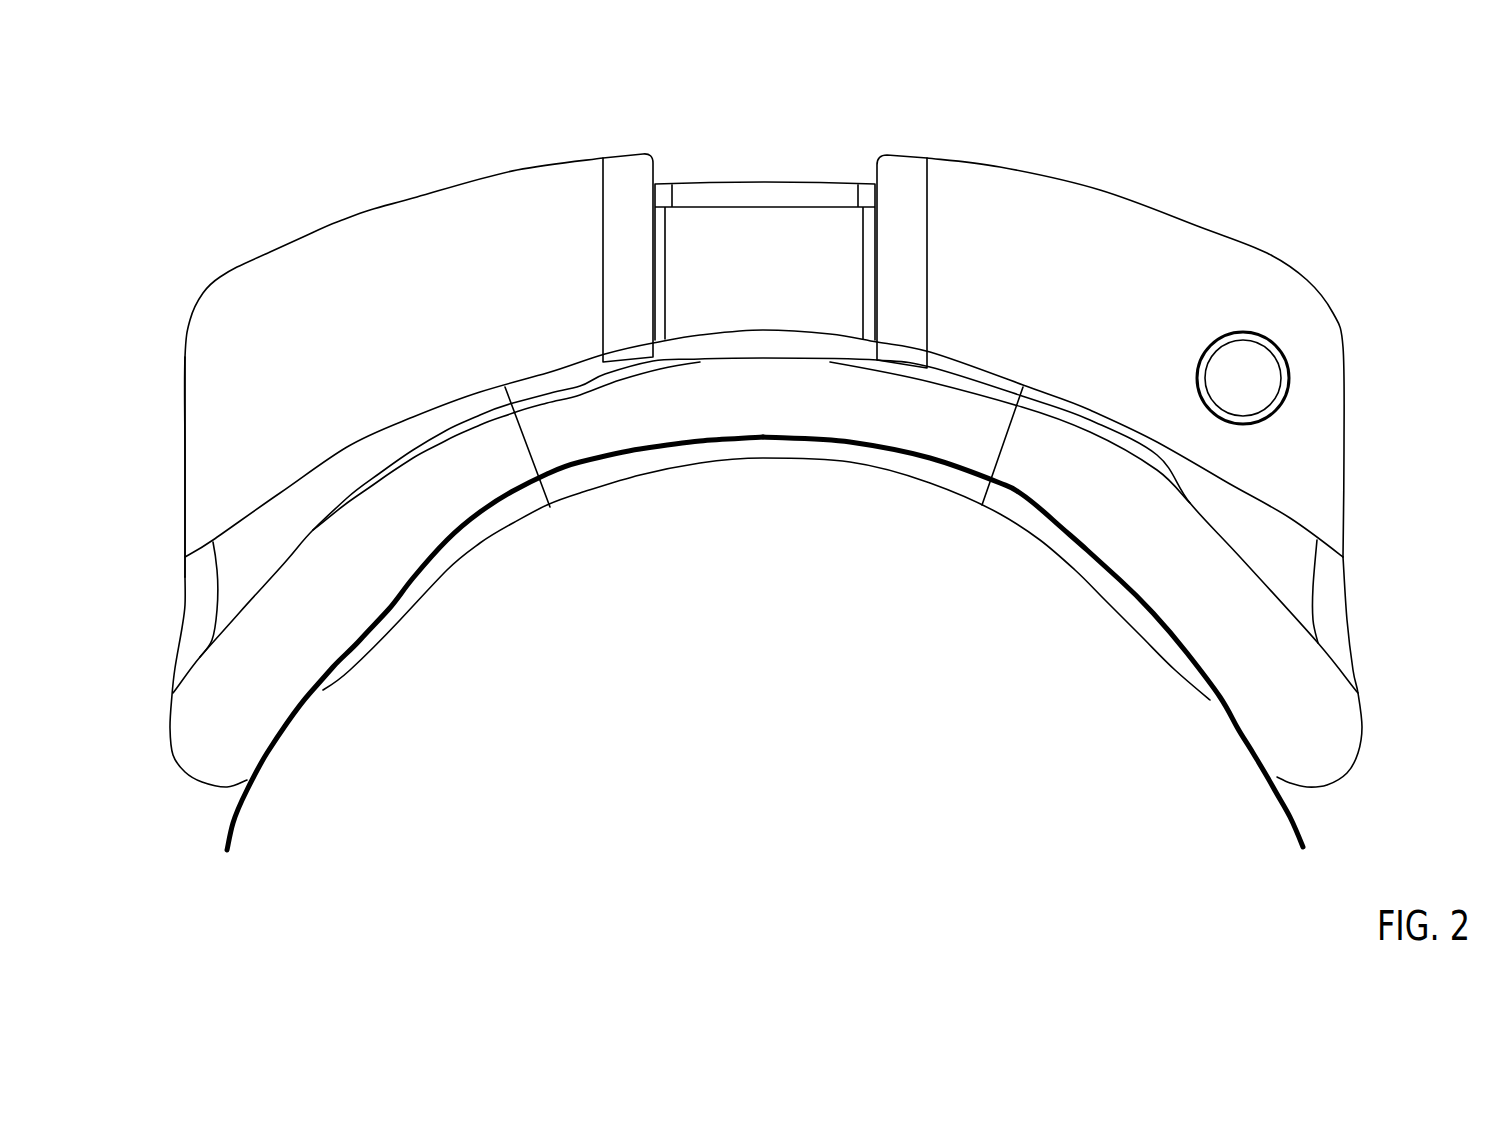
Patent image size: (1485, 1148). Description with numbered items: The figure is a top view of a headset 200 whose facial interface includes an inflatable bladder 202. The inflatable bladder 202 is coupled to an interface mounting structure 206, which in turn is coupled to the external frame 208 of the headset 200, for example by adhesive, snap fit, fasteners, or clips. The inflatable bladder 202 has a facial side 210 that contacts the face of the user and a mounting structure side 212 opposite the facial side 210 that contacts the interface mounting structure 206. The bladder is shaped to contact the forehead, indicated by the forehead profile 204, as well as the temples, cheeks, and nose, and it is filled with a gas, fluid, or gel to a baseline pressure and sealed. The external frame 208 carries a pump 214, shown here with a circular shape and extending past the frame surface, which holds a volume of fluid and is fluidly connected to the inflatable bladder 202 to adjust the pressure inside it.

The headset 200 is at (208, 107).
The inflatable bladder 202 is at (230, 760).
The forehead profile 204 is at (227, 833).
The interface mounting structure 206 is at (198, 595).
The external frame 208 is at (200, 487).
The facial side 210 is at (1233, 730).
The mounting structure side 212 is at (1325, 645).
The pump 214 is at (1287, 375).